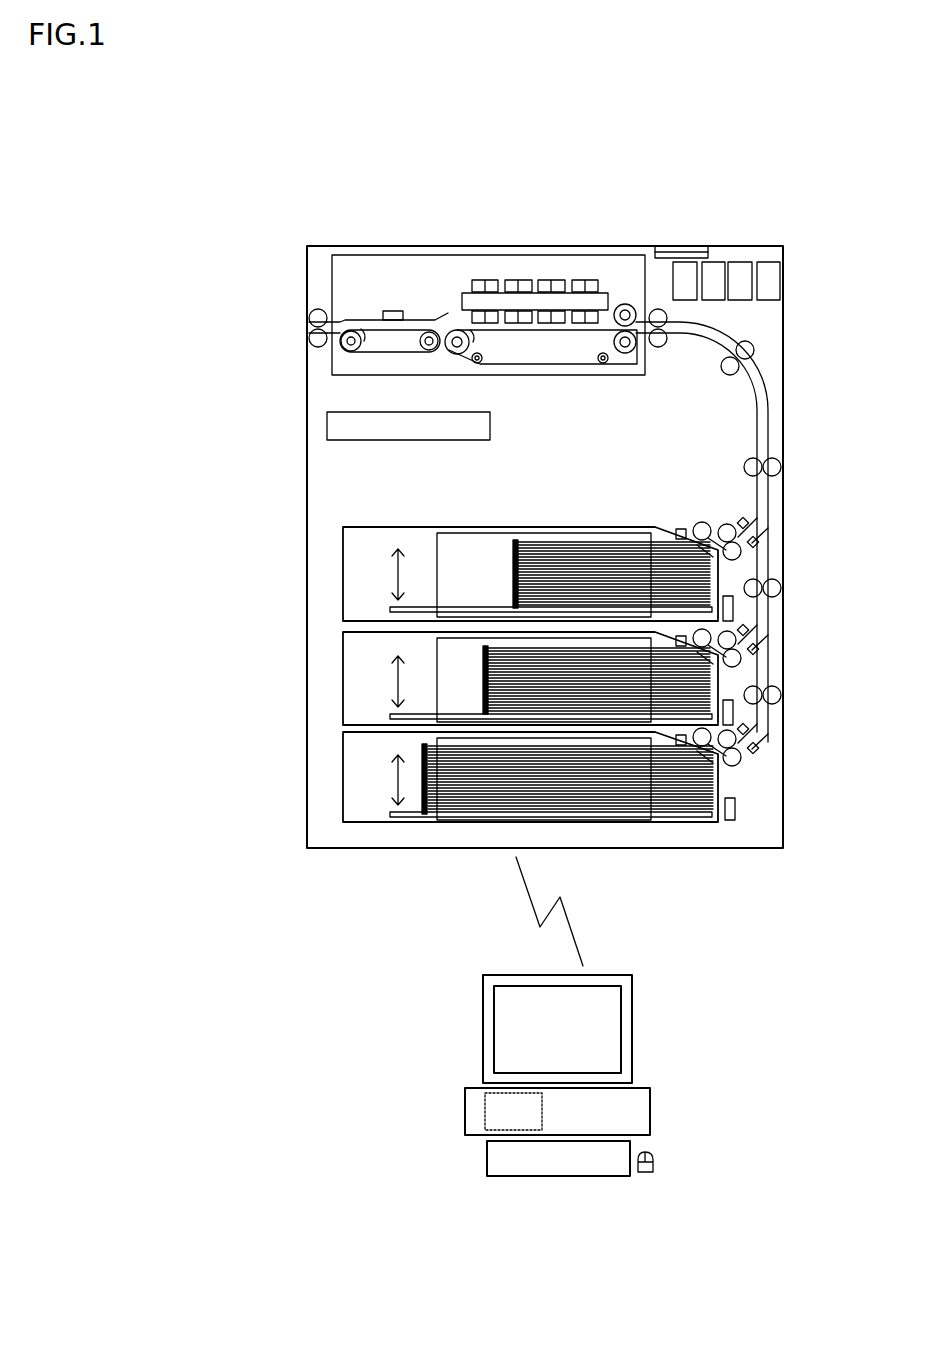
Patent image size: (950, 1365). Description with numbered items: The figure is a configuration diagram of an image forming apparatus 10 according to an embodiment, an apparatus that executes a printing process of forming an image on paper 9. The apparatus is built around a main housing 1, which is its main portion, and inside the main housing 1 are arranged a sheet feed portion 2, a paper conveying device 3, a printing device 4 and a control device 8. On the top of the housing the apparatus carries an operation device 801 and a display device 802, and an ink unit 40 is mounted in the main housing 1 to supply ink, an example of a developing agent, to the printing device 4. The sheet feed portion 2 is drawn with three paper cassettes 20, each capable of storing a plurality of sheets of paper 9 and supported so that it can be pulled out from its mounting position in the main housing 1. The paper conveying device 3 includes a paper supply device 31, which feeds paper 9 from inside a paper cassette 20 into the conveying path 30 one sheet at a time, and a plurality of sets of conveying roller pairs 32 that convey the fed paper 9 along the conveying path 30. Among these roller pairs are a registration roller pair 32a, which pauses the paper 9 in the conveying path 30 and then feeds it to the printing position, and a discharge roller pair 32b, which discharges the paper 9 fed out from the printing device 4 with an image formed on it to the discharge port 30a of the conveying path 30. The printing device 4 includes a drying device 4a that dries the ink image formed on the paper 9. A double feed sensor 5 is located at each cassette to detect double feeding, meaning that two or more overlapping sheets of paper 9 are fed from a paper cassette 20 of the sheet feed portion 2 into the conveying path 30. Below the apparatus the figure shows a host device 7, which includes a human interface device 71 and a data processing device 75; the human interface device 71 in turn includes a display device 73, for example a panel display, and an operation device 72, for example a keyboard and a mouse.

The image forming apparatus 10 is at (347, 192).
The main housing 1 is at (327, 247).
The sheet feed portion 2 is at (328, 512).
The paper conveying device 3 is at (752, 332).
The printing device 4 is at (645, 290).
The drying device 4a is at (389, 308).
The double feed sensor 5 is at (755, 545).
The host device 7 is at (613, 972).
The control device 8 is at (420, 441).
The paper 9 is at (575, 545).
The paper cassette 20 is at (343, 556).
The conveying path 30 is at (777, 420).
The discharge port 30a is at (314, 331).
The paper supply device 31 is at (718, 522).
The conveying roller pairs 32 is at (744, 468).
The registration roller pair 32a is at (658, 346).
The discharge roller pair 32b is at (320, 306).
The ink unit 40 is at (765, 262).
The human interface device 71 is at (735, 1073).
The operation device 72 is at (660, 1152).
The display device 73 is at (632, 1050).
The data processing device 75 is at (485, 1112).
The operation device 801 is at (680, 244).
The display device 802 is at (742, 262).